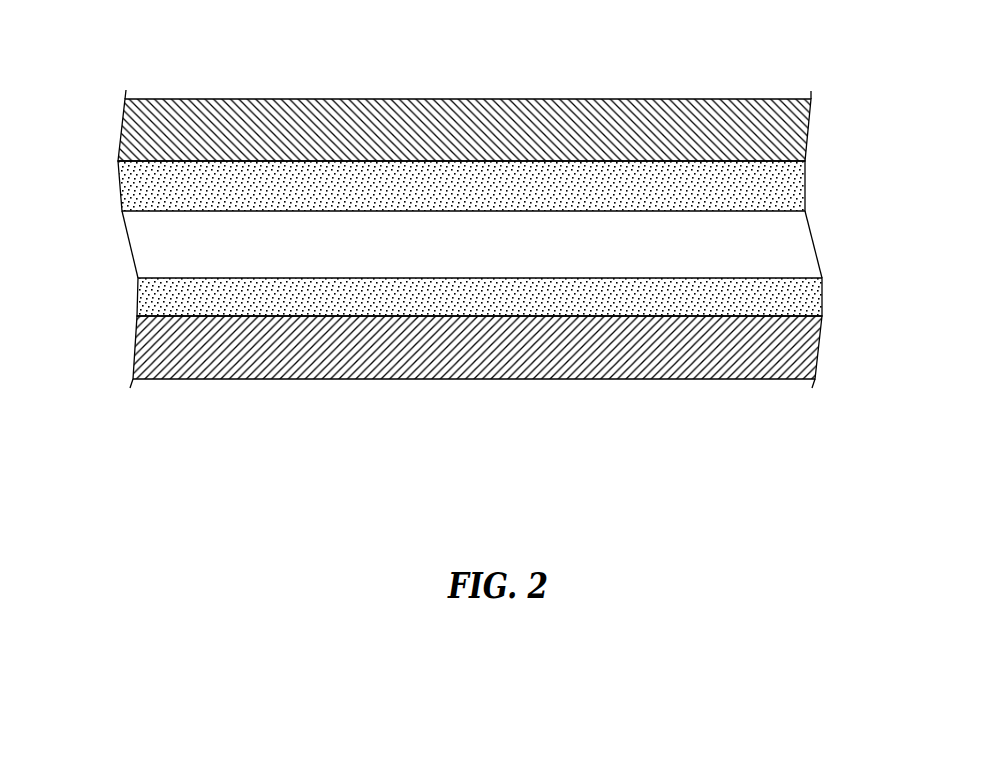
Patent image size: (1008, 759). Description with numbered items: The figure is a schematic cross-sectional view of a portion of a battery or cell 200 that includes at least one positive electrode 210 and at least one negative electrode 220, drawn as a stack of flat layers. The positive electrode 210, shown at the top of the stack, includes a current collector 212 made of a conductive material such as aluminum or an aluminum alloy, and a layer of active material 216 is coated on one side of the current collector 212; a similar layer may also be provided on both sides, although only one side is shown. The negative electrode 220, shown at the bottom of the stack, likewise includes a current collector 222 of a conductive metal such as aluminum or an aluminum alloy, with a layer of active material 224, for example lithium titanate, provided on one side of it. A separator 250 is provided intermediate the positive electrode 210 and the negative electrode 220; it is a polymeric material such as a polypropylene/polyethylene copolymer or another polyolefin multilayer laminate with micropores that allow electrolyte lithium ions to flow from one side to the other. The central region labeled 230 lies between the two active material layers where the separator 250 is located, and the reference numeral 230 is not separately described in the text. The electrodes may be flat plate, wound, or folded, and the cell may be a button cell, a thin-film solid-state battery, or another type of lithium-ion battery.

The battery or cell 200 is at (461, 238).
The positive electrode 210 is at (458, 134).
The current collector 212 is at (372, 123).
The active material 216 is at (138, 178).
The core layer 230 is at (472, 248).
The separator 250 is at (155, 255).
The negative electrode 220 is at (469, 362).
The active material 224 is at (165, 302).
The current collector 222 is at (697, 353).